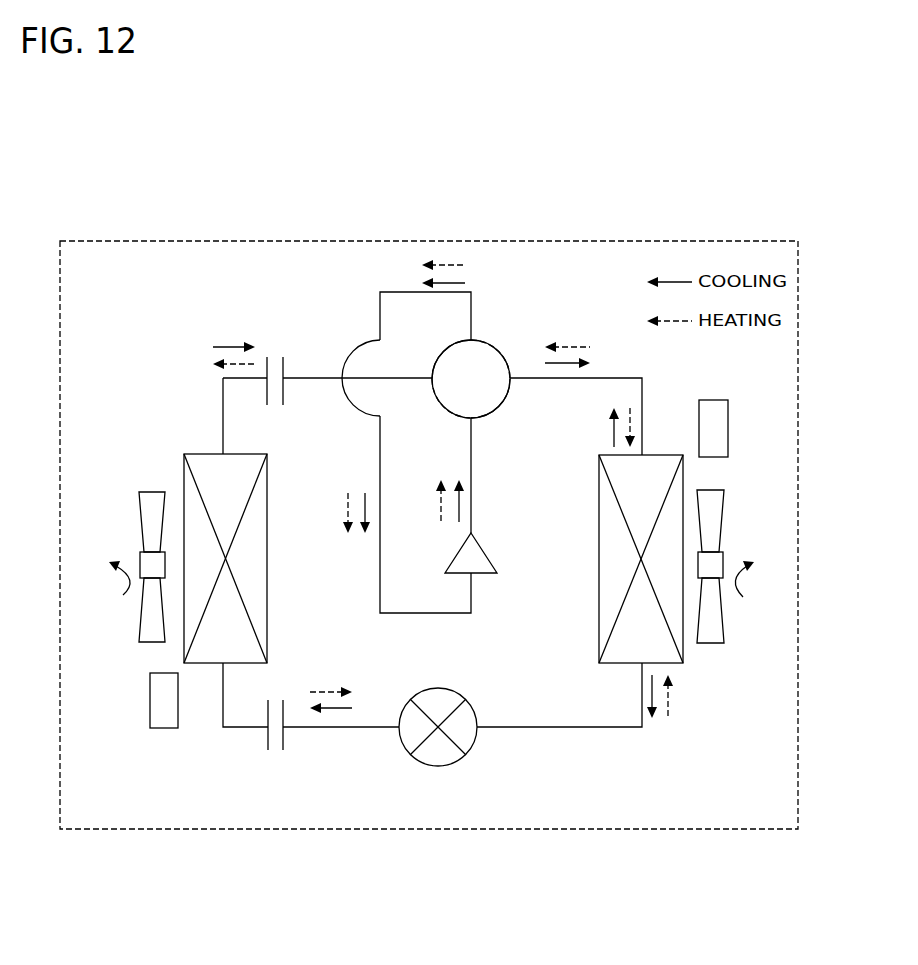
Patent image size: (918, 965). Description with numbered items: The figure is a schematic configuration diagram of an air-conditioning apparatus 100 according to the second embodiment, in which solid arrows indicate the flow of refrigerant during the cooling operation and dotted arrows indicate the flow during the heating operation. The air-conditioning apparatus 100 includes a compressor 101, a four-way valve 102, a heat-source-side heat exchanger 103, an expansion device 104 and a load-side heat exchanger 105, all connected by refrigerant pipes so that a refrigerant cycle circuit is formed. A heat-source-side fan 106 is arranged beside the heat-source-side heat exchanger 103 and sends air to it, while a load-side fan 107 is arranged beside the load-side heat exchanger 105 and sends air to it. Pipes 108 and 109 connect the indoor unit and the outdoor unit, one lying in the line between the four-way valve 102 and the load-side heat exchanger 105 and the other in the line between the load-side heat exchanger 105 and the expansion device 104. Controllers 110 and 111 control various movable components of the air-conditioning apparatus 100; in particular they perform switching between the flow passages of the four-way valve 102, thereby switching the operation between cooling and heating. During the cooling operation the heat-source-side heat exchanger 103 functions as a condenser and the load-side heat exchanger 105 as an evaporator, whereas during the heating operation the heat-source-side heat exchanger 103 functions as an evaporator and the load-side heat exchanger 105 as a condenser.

The air-conditioning apparatus 100 is at (643, 227).
The compressor 101 is at (453, 560).
The four-way valve 102 is at (450, 346).
The heat-source-side heat exchanger 103 is at (613, 665).
The expansion device 104 is at (438, 766).
The load-side heat exchanger 105 is at (205, 455).
The heat-source-side fan 106 is at (728, 627).
The load-side fan 107 is at (153, 490).
The pipe 108 is at (274, 750).
The pipe 109 is at (276, 357).
The controller 110 is at (728, 428).
The controller 111 is at (150, 697).